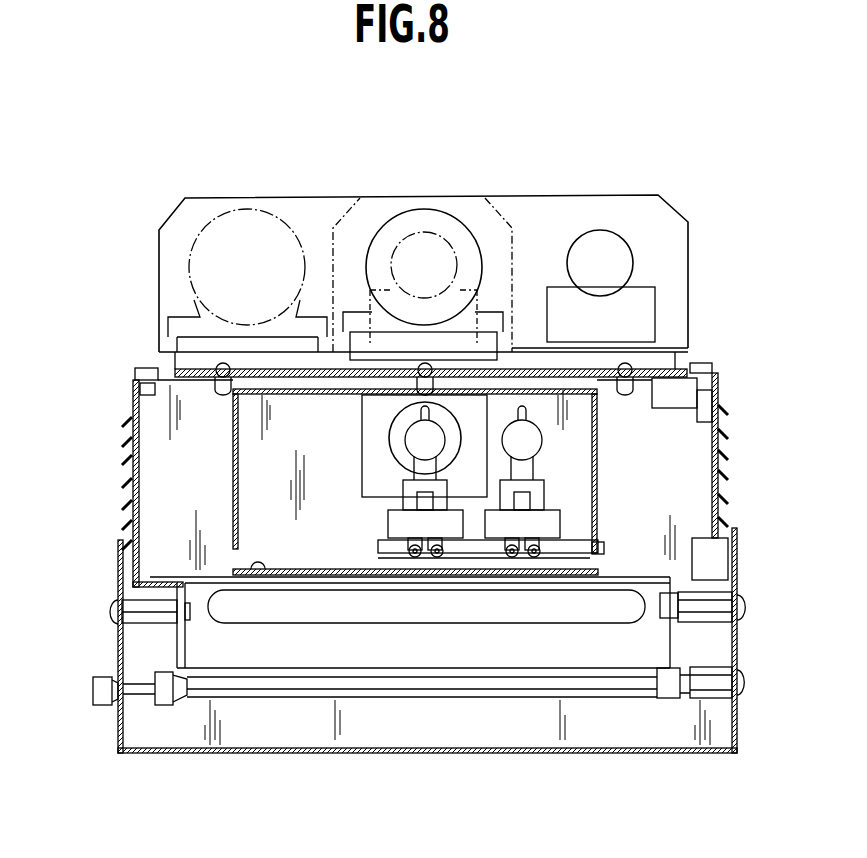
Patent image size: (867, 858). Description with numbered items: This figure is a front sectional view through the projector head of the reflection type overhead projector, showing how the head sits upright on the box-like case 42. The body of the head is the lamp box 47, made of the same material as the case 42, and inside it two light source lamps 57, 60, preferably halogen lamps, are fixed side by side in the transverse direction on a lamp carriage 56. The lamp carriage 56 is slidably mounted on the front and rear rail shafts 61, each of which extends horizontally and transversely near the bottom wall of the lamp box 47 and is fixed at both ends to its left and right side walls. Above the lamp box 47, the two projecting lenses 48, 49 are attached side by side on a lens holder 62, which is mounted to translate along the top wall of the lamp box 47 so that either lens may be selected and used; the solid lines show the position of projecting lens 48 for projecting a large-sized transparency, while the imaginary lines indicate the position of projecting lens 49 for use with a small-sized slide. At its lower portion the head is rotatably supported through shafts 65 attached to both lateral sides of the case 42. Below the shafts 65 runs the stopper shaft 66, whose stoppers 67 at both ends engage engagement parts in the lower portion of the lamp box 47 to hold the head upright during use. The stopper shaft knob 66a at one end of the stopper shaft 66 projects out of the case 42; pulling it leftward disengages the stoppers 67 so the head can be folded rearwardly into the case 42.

The case 42 is at (740, 718).
The lamp box 47 is at (132, 407).
The projecting lens 48 is at (437, 222).
The projecting lens 49 is at (607, 233).
The lamp carriage 56 is at (573, 540).
The light source lamp 57 is at (419, 462).
The light source lamp 60 is at (535, 440).
The rail shaft 61 is at (604, 549).
The lens holder 62 is at (528, 210).
The shaft 65 is at (130, 612).
The stopper shaft 66 is at (429, 700).
The stopper shaft knob 66a is at (100, 692).
The stopper 67 is at (177, 703).